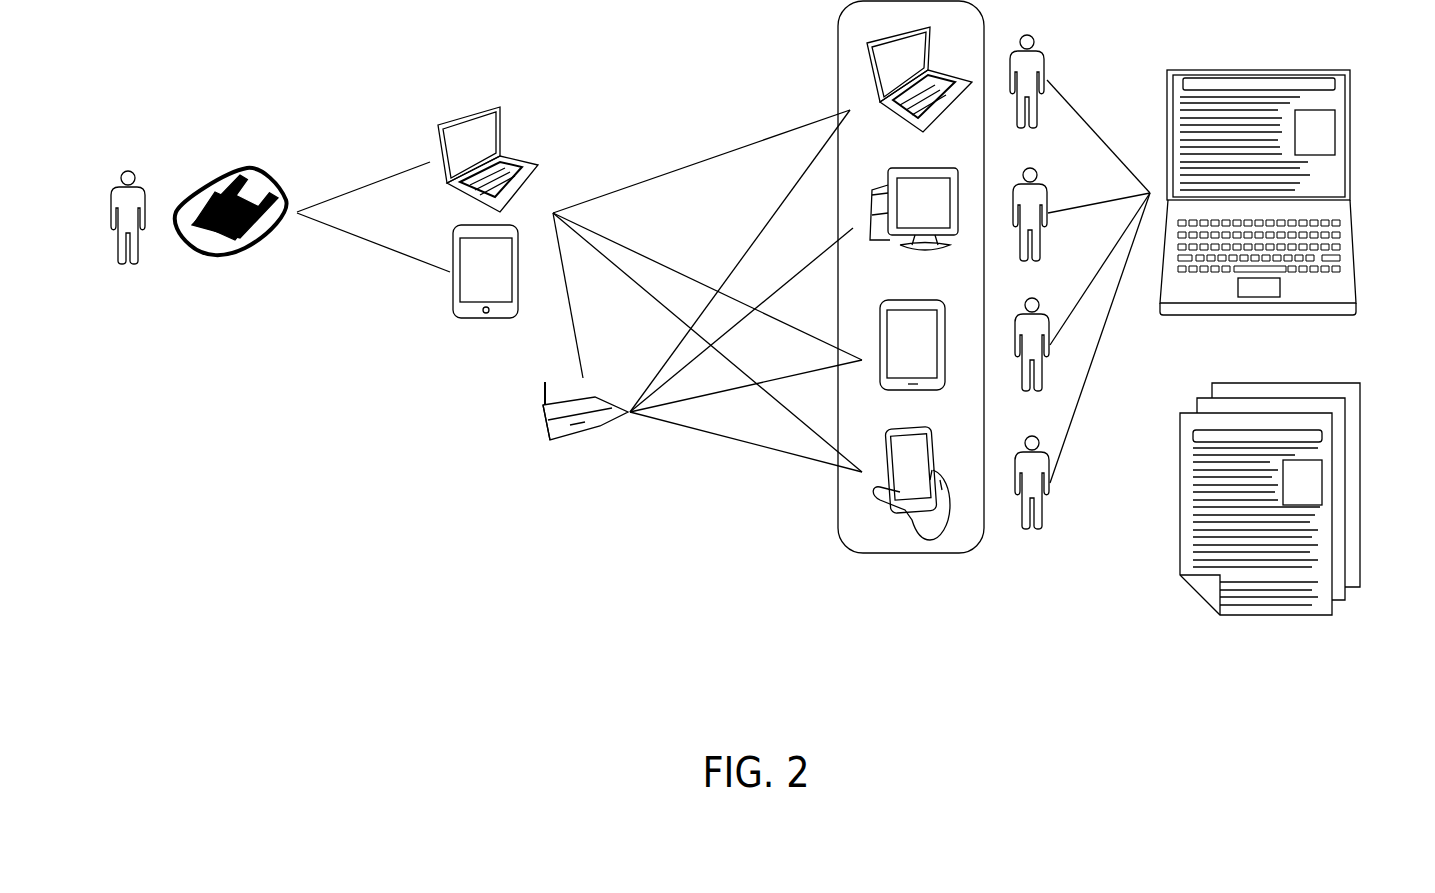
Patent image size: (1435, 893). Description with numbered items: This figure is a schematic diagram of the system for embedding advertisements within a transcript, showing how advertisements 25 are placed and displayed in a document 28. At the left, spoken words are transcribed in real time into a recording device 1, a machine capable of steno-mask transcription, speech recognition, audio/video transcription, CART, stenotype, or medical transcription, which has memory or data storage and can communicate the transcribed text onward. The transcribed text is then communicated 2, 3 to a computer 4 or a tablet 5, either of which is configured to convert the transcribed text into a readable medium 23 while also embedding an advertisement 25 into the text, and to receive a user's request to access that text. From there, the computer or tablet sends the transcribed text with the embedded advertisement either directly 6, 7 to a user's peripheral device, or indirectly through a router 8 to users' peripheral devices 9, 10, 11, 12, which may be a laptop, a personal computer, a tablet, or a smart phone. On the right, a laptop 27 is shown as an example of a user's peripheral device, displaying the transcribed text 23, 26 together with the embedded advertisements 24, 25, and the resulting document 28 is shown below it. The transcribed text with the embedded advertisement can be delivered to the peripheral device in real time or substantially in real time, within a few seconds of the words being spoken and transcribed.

The recording device 1 is at (231, 192).
The communication of transcribed text 2 is at (363, 181).
The communication of transcribed text 3 is at (373, 247).
The computer 4 is at (488, 156).
The tablet 5 is at (485, 291).
The direct communication to user's peripheral device 6 is at (701, 161).
The direct communication to user's peripheral device 7 is at (707, 286).
The router 8 is at (585, 326).
The indirect communication to user's peripheral device 9 is at (740, 261).
The indirect communication to user's peripheral device 10 is at (741, 320).
The indirect communication to user's peripheral device 11 is at (746, 383).
The indirect communication to user's peripheral device 12 is at (746, 442).
The readable medium 23 is at (1248, 107).
The embedded advertisement 24 is at (1280, 78).
The advertisement 25 is at (1318, 127).
The transcribed text 26 is at (1295, 165).
The laptop 27 is at (1320, 290).
The document 28 is at (1193, 513).